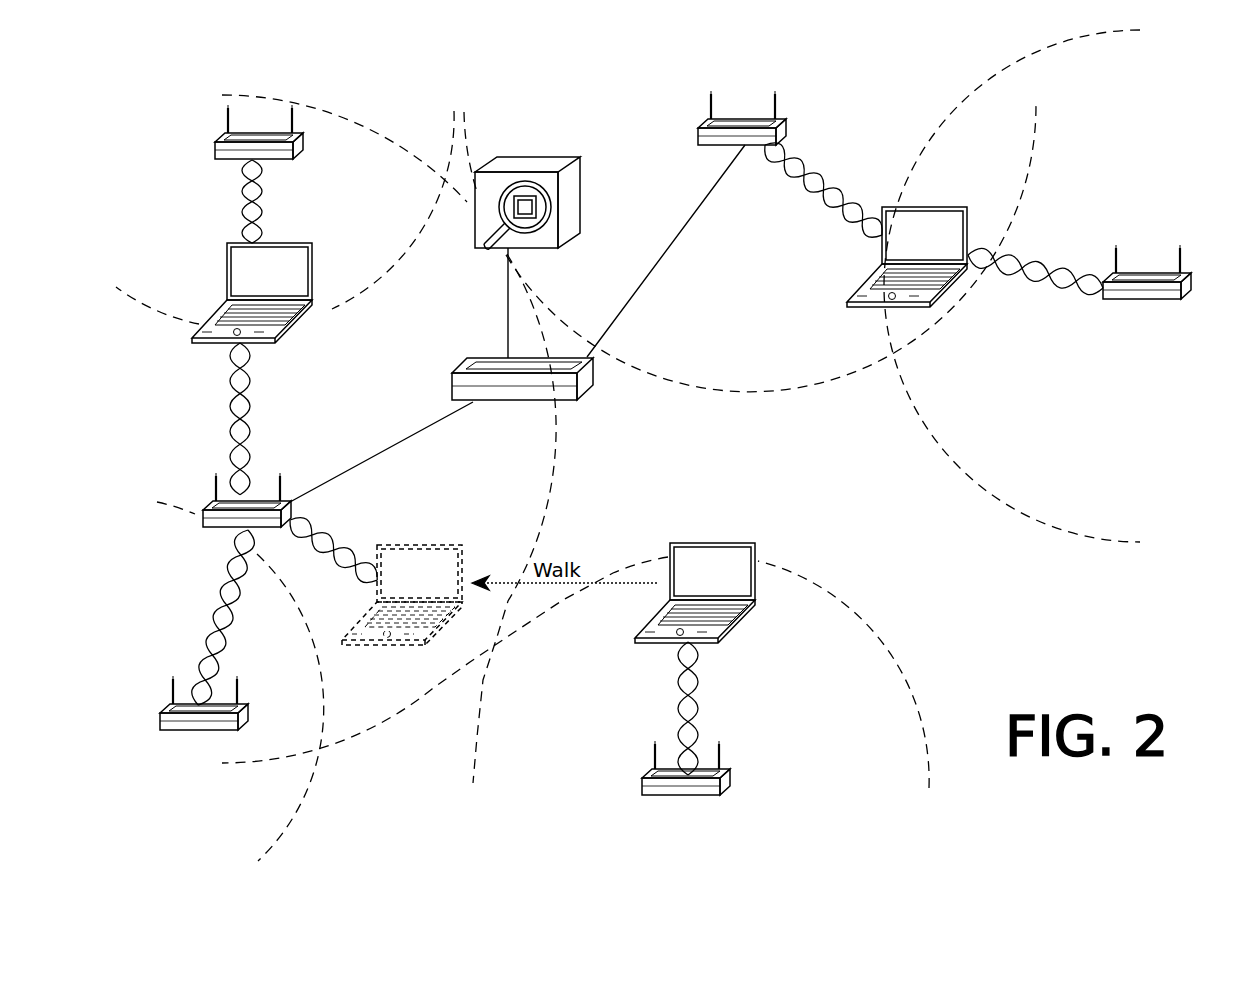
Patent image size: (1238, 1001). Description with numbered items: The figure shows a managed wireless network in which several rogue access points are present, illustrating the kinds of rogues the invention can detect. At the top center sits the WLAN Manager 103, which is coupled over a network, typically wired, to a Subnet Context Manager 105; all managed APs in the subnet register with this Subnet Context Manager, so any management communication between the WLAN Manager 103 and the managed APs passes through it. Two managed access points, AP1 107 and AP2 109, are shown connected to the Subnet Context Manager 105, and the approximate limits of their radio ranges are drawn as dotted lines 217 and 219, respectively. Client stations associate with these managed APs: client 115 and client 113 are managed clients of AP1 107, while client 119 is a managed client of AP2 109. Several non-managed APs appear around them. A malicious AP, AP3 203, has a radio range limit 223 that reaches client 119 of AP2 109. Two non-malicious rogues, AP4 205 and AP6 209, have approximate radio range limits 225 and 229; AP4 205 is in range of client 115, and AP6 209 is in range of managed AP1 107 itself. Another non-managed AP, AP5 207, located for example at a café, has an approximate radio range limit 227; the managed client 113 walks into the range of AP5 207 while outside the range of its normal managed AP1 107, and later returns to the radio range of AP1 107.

The WLAN Manager 103 is at (540, 250).
The Subnet Context Manager 105 is at (485, 368).
The managed AP AP1 107 is at (213, 528).
The managed AP AP2 109 is at (700, 142).
The managed client 113 is at (650, 640).
The managed client 115 is at (292, 245).
The managed client 119 is at (940, 210).
The malicious AP AP3 203 is at (1140, 300).
The non-malicious rogue AP AP4 205 is at (296, 140).
The non-managed AP AP5 207 is at (655, 780).
The non-malicious rogue AP AP6 209 is at (190, 728).
The limit of radio range 217 is at (377, 722).
The limit of radio range 219 is at (759, 386).
The limit of radio range 223 is at (964, 463).
The limit of radio range 225 is at (331, 313).
The limit of radio range 227 is at (877, 637).
The limit of radio range 229 is at (307, 798).